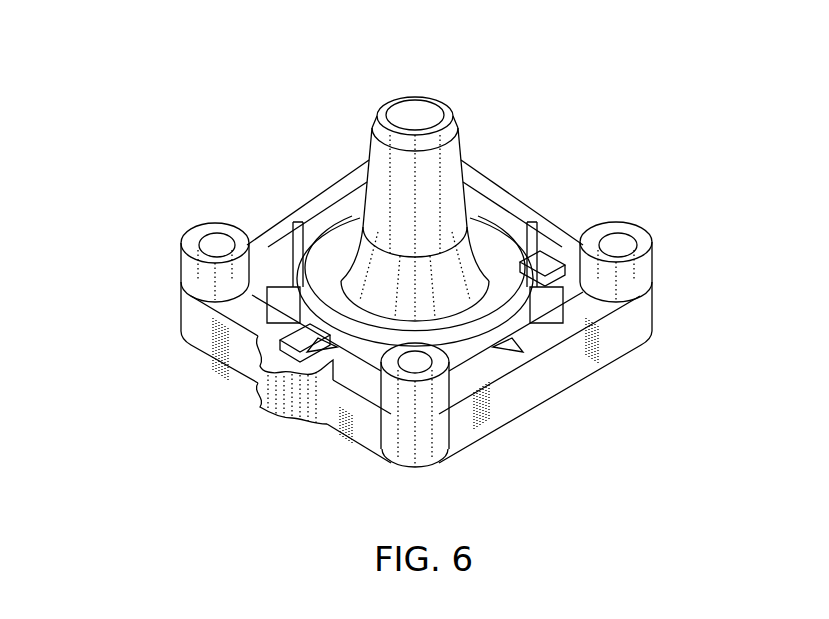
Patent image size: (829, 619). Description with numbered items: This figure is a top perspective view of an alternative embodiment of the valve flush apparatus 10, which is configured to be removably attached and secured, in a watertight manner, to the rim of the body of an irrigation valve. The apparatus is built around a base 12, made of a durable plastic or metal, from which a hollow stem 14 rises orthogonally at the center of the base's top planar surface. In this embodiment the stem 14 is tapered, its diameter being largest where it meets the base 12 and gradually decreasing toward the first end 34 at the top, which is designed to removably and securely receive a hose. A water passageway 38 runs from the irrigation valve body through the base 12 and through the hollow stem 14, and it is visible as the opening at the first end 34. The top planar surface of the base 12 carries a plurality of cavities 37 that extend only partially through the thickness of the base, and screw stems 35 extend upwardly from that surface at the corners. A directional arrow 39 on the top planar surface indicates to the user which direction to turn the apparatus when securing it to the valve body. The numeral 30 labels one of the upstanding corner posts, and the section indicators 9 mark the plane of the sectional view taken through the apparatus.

The valve flush apparatus 10 is at (186, 31).
The base 12 is at (540, 383).
The stem 14 is at (391, 181).
The corner mounting post 30 is at (619, 240).
The first end 34 is at (446, 106).
The screw stems 35 is at (407, 393).
The cavities 37 is at (541, 268).
The waterway 38 is at (424, 126).
The directional arrow 39 is at (300, 347).
The section line 9- 9 is at (167, 328).